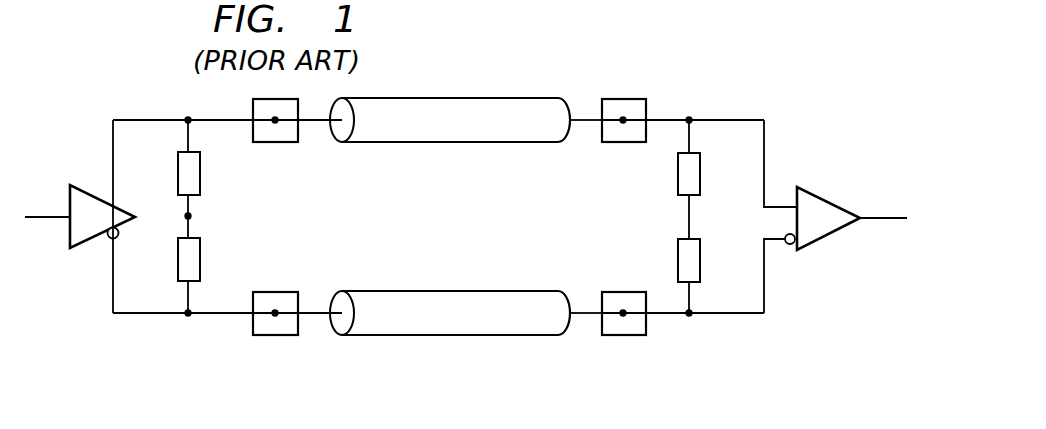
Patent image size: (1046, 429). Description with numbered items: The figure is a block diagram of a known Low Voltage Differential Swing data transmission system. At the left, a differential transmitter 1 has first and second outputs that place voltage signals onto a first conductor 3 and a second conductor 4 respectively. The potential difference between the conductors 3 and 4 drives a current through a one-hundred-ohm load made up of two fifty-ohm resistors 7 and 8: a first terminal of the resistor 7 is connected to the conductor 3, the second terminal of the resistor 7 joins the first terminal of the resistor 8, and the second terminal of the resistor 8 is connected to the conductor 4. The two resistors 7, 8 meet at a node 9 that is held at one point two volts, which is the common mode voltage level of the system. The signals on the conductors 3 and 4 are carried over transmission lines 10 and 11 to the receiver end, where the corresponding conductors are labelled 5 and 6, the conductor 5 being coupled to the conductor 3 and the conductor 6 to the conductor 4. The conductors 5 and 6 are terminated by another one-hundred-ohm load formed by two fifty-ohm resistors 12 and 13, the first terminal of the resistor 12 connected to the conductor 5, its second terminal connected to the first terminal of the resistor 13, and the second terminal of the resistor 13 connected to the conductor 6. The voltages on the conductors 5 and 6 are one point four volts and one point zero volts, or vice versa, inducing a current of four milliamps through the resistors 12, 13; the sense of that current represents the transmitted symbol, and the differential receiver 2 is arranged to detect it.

The differential transmitter 1 is at (67, 205).
The differential receiver 2 is at (830, 197).
The conductor 3 is at (145, 118).
The conductor 4 is at (145, 315).
The conductor 5 is at (732, 118).
The conductor 6 is at (732, 315).
The resistor 7 is at (202, 173).
The resistor 8 is at (202, 260).
The node 9 is at (192, 216).
The transmission line 10 is at (448, 97).
The transmission line 11 is at (452, 337).
The resistor 12 is at (702, 175).
The resistor 13 is at (702, 260).